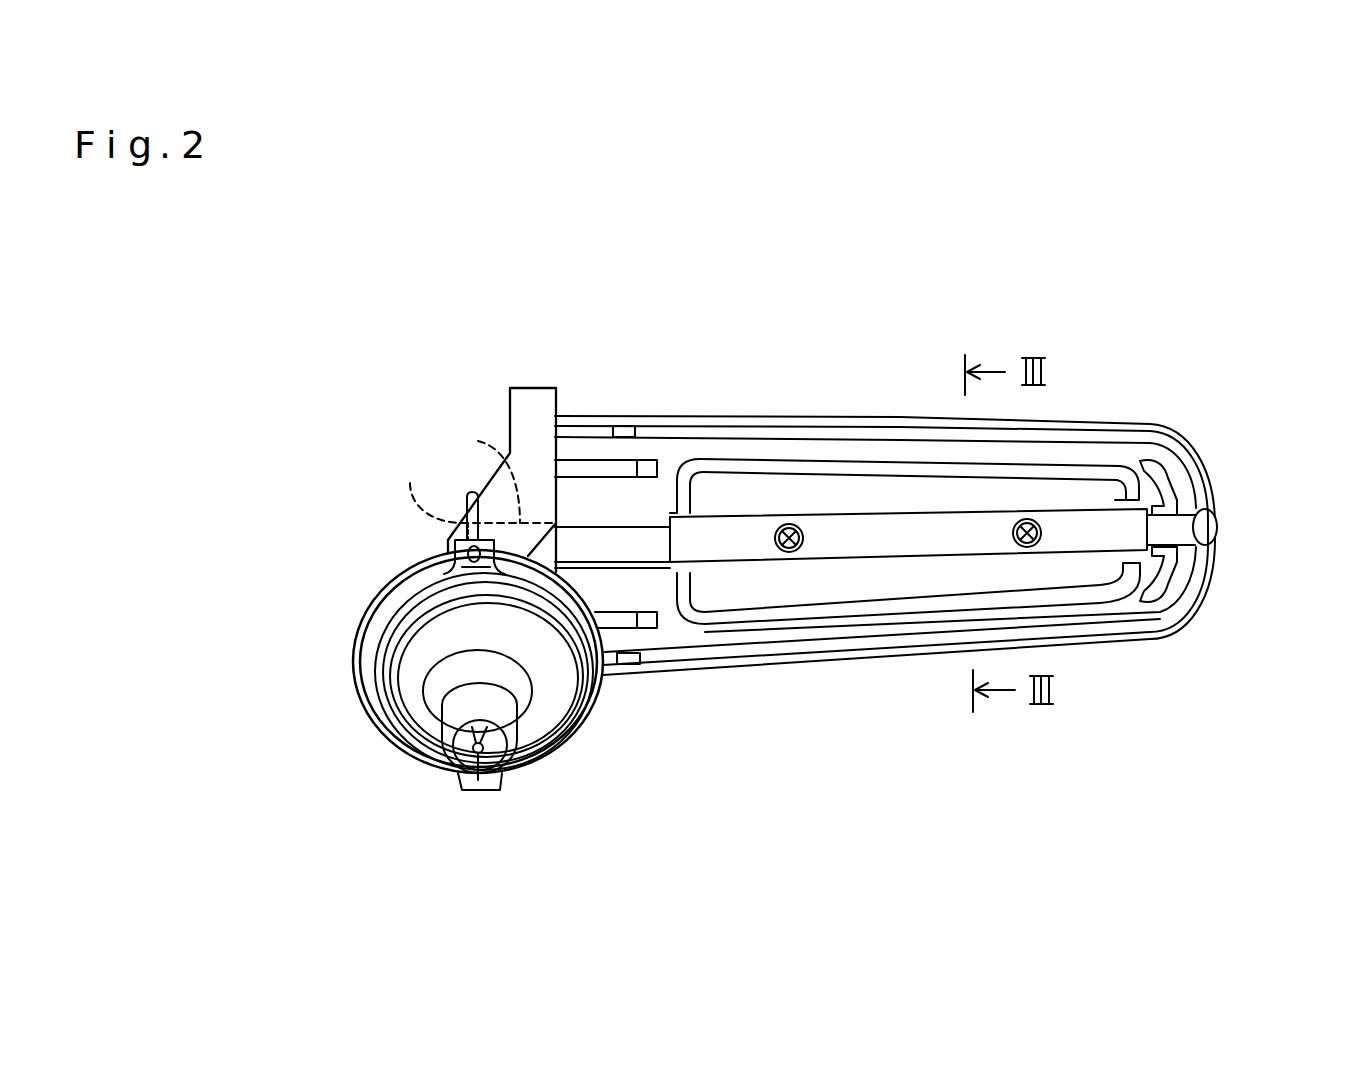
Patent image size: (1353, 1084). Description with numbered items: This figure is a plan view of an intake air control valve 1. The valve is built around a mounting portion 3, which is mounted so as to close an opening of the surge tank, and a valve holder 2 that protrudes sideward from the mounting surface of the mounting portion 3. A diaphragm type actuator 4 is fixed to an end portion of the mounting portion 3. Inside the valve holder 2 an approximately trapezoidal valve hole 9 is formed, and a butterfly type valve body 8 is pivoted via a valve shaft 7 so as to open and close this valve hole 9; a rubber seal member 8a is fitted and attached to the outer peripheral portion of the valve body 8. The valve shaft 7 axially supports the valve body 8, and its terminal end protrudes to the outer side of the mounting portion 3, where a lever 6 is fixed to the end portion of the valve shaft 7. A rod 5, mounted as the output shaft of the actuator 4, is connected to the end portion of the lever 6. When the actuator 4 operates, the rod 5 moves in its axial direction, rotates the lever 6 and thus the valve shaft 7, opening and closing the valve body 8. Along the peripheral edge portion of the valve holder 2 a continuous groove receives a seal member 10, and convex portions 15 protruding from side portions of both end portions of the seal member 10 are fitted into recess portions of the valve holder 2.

The intake air control valve 1 is at (812, 388).
The valve holder 2 is at (1025, 450).
The mounting portion 3 is at (532, 397).
The diaphragm type actuator 4 is at (355, 640).
The rod 5 is at (477, 510).
The lever 6 is at (464, 495).
The valve shaft 7 is at (737, 540).
The valve body 8 is at (778, 495).
The rubber seal member 8a is at (928, 466).
The valve hole 9 is at (878, 462).
The seal member 10 is at (697, 416).
The convex portions 15 is at (624, 426).